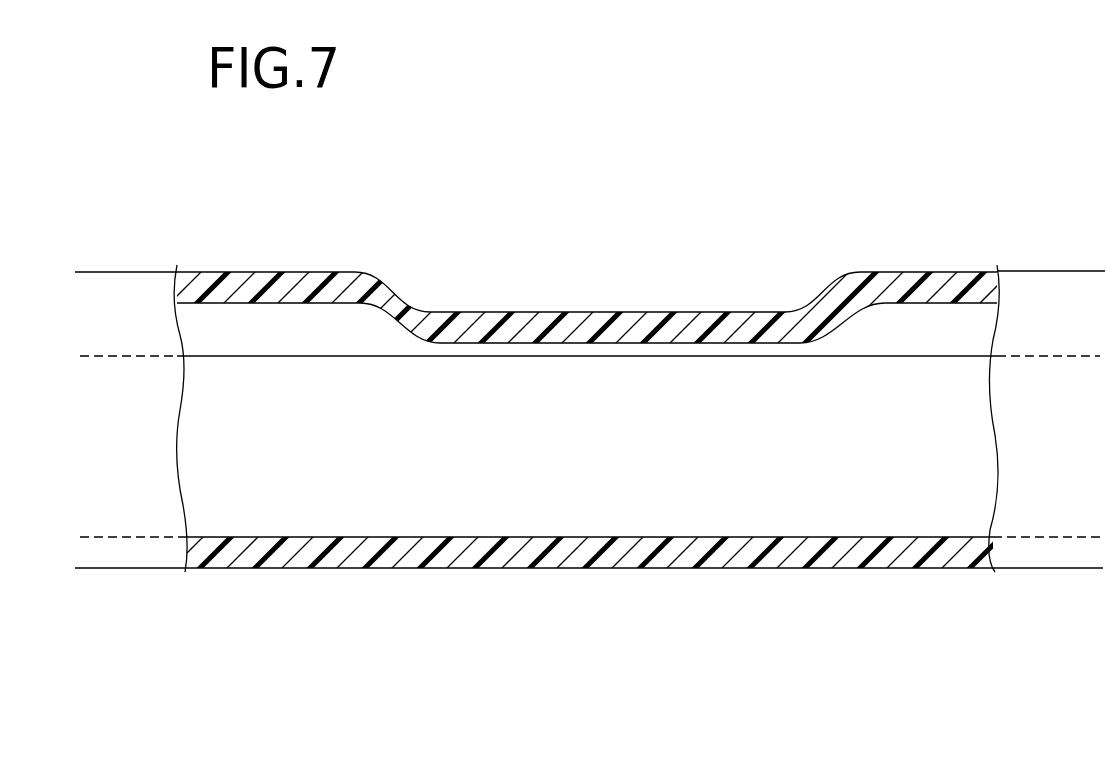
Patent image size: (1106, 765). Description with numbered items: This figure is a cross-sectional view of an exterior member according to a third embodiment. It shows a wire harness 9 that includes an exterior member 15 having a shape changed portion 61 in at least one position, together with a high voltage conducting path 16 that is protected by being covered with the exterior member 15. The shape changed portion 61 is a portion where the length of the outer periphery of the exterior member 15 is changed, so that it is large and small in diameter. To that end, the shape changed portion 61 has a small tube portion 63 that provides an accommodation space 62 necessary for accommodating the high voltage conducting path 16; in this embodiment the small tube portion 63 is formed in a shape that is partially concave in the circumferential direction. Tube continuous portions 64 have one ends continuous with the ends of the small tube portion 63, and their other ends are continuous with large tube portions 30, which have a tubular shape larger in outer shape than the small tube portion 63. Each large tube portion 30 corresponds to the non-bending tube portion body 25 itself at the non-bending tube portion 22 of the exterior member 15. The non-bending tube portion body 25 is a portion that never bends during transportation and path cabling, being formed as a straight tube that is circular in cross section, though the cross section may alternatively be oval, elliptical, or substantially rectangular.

The wire harness 9 is at (849, 123).
The exterior member 15 is at (1031, 269).
The high voltage conducting path 16 is at (914, 349).
The non-bending tube portion 22 is at (1032, 547).
The non-bending tube portion body 25 is at (143, 555).
The large tube portion 30 is at (346, 273).
The shape changed portion 61 is at (648, 300).
The accommodation space 62 is at (545, 348).
The small tube portion 63 is at (575, 313).
The tube continuous portion 64 is at (435, 318).